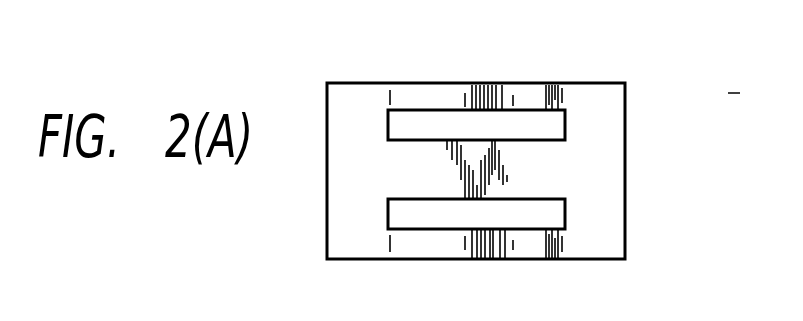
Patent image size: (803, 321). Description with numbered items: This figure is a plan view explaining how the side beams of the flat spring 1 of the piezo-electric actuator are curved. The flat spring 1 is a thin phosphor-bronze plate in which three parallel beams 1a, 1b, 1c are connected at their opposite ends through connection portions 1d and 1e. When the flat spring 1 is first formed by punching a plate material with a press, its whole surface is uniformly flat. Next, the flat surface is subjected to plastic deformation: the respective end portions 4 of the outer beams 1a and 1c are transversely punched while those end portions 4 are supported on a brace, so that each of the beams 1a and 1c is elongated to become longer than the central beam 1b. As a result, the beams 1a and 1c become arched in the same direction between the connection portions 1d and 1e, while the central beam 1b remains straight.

The flat spring 1 is at (517, 80).
The beam 1a is at (433, 100).
The central beam 1b is at (416, 170).
The beam 1c is at (478, 238).
The connection portion 1d is at (607, 243).
The connection portion 1e is at (345, 226).
The end portions 4 is at (560, 243).